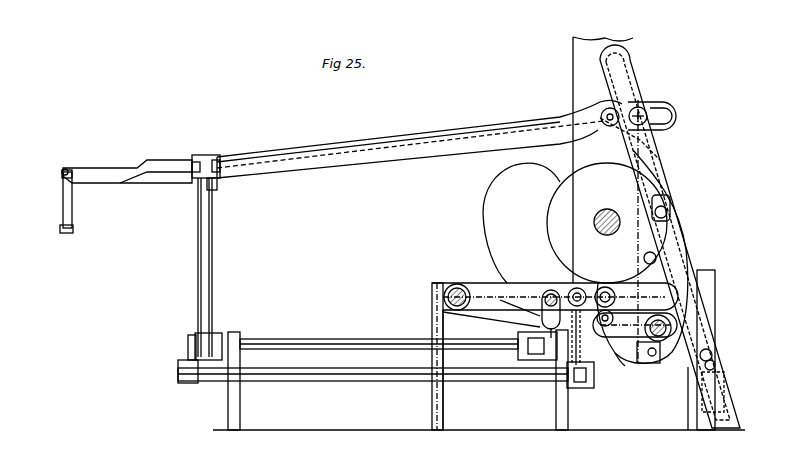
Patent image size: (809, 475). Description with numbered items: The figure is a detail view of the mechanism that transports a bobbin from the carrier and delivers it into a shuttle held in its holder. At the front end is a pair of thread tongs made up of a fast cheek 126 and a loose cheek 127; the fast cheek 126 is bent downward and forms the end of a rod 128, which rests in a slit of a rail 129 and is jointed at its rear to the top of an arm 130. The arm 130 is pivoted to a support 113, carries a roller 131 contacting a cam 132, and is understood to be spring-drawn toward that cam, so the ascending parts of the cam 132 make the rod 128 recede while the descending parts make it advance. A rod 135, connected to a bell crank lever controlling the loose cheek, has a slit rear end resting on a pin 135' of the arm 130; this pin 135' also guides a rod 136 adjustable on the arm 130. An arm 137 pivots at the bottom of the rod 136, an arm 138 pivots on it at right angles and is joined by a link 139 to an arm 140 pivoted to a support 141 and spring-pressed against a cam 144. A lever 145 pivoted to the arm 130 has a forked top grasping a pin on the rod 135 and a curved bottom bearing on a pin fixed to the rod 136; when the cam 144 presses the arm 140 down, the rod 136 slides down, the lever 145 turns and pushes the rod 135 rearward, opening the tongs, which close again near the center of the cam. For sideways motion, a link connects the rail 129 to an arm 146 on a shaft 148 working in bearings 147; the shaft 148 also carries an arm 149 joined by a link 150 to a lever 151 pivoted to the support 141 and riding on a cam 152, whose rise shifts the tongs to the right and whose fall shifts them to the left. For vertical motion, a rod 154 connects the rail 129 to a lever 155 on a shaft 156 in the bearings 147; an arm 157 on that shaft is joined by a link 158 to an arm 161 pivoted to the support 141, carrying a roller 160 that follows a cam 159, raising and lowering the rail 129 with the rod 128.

The support 113 is at (715, 298).
The fast cheek 126 is at (73, 229).
The loose cheek 127 is at (63, 207).
The rod 128 is at (138, 186).
The rail 129 is at (227, 193).
The arm 130 is at (678, 243).
The roller 131 is at (668, 218).
The cam 132 is at (687, 262).
The rod 135 is at (419, 139).
The pin 135' is at (662, 106).
The rod 136 is at (636, 58).
The arm 137 is at (714, 355).
The arm 138 is at (647, 364).
The link 139 is at (666, 362).
The arm 140 is at (630, 370).
The support 141 is at (432, 292).
The cam 144 is at (650, 253).
The lever 145 is at (658, 146).
The arm 146 is at (212, 246).
The bearings 147 is at (240, 405).
The shaft 148 is at (338, 341).
The arm 149 is at (526, 334).
The link 150 is at (544, 290).
The lever 151 is at (648, 292).
The cam 152 is at (552, 198).
The rod 154 is at (198, 277).
The lever 155 is at (188, 342).
The shaft 156 is at (352, 383).
The arm 157 is at (566, 380).
The link 158 is at (579, 360).
The cam 159 is at (590, 288).
The roller 160 is at (645, 285).
The arm 161 is at (502, 292).